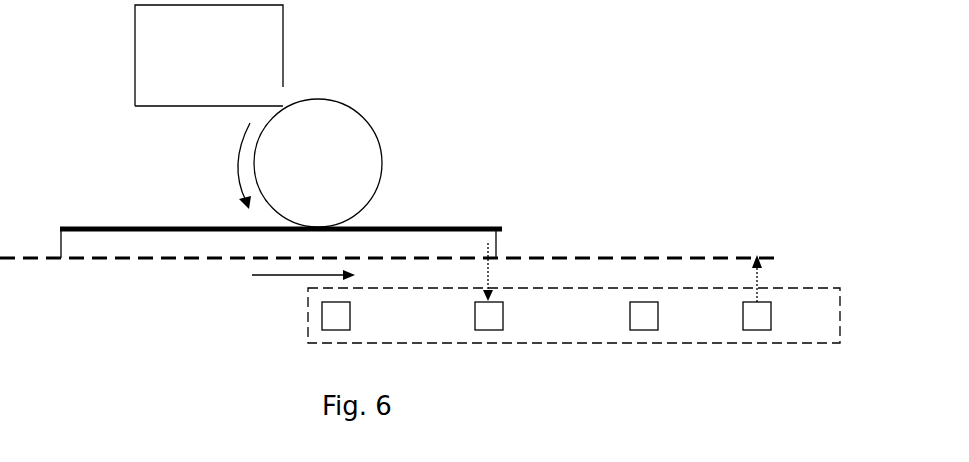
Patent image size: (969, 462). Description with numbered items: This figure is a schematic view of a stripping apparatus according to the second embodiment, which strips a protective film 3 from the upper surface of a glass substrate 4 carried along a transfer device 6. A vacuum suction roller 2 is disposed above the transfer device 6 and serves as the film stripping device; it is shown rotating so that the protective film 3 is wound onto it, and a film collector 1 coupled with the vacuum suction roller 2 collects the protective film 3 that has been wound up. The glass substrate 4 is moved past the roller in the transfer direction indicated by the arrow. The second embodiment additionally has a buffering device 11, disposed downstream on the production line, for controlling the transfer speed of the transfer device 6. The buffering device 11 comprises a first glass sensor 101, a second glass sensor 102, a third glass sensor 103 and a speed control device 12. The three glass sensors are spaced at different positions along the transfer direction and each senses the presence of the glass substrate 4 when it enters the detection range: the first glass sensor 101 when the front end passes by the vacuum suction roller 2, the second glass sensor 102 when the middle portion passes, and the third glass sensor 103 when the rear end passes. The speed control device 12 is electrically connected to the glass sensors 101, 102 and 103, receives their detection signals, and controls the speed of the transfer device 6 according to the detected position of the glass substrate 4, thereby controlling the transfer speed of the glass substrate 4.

The film collector 1 is at (143, 72).
The vacuum suction roller 2 is at (262, 170).
The protective film 3 is at (106, 228).
The glass substrate 4 is at (77, 248).
The transfer device 6 is at (513, 254).
The buffering device 11 is at (308, 332).
The first glass sensor 101 is at (348, 316).
The second glass sensor 102 is at (501, 316).
The third glass sensor 103 is at (656, 316).
The speed control device 12 is at (769, 316).